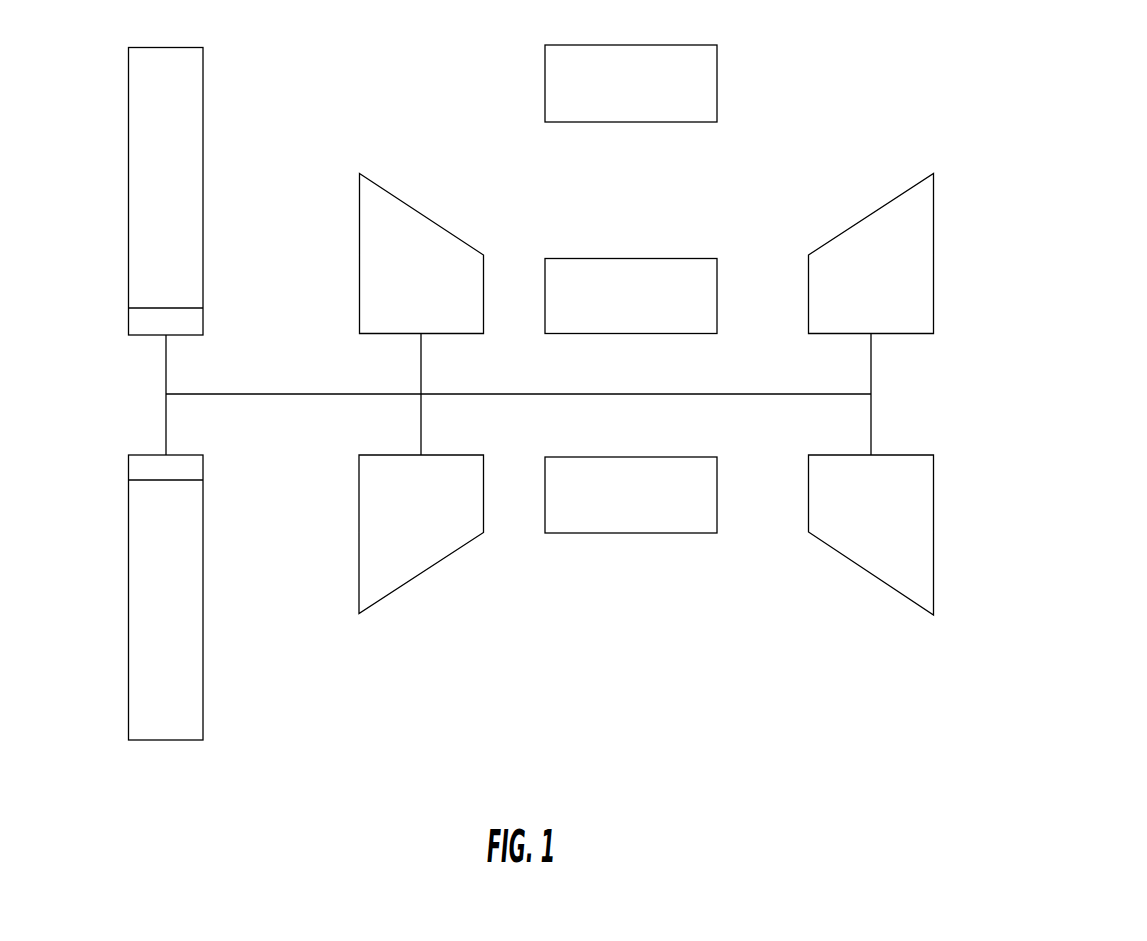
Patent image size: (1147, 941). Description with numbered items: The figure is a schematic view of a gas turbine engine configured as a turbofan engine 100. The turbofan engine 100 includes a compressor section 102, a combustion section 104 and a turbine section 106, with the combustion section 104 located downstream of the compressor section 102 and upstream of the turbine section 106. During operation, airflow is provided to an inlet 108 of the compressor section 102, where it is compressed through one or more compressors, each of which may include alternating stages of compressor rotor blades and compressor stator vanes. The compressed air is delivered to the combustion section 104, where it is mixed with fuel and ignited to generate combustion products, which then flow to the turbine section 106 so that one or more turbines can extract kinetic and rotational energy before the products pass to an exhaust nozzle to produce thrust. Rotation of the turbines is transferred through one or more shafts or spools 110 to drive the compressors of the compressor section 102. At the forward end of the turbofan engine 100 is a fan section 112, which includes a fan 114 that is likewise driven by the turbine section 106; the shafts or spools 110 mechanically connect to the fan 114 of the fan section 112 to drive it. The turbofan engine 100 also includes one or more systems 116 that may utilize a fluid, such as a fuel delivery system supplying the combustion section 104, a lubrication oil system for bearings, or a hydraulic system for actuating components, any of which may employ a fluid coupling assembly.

The turbofan engine 100 is at (791, 113).
The compressor section 102 is at (412, 227).
The combustion section 104 is at (620, 258).
The turbine section 106 is at (913, 247).
The inlet 108 is at (400, 370).
The shafts or spools 110 is at (535, 394).
The fan section 112 is at (227, 123).
The fan 114 is at (152, 578).
The systems 116 is at (650, 98).